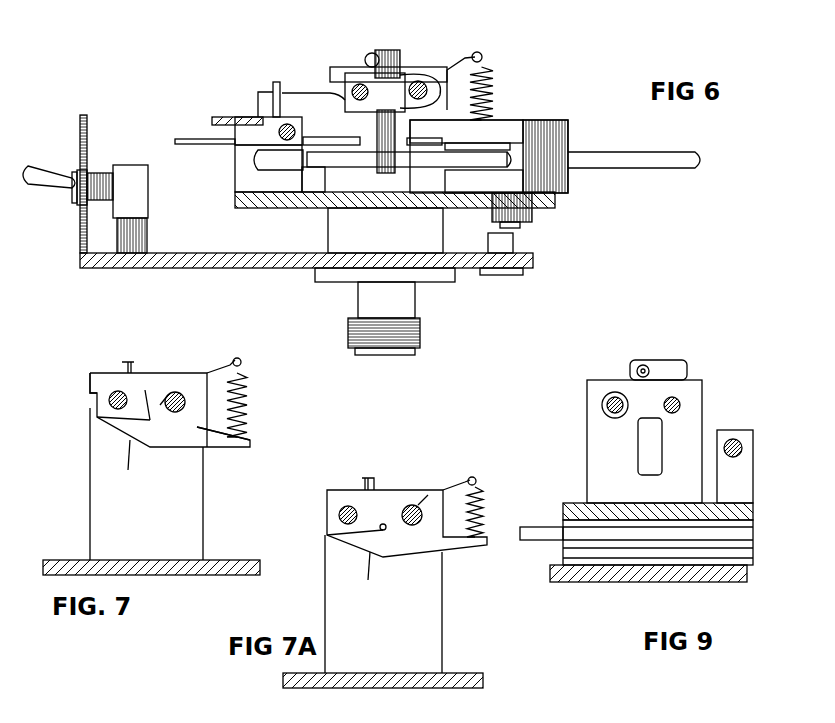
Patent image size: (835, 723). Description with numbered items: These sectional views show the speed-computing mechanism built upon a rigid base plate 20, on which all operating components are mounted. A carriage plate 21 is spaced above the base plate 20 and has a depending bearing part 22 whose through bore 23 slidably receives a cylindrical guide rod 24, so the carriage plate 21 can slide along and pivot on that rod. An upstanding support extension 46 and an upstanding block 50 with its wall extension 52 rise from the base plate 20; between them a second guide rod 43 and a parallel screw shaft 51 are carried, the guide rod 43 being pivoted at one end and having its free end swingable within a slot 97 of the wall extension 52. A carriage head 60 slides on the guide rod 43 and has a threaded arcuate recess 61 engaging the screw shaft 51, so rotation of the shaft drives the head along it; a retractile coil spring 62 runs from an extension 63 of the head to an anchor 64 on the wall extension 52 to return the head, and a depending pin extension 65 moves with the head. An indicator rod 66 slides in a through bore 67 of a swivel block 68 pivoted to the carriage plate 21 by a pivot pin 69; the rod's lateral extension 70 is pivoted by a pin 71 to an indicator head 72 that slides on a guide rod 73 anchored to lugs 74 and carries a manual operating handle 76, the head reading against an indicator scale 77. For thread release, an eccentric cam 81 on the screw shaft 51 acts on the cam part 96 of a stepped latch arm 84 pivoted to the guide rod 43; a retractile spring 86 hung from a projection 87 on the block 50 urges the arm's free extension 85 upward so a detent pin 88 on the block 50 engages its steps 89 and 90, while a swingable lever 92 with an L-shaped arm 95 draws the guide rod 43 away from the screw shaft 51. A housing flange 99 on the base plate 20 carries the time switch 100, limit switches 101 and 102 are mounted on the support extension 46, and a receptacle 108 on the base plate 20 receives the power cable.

In FIG. 6, the base plate 20 is at (240, 268).
In FIG. 7, the base plate 20 is at (225, 572).
In FIG. 7A, the base plate 20 is at (450, 688).
In FIG. 9, the base plate 20 is at (607, 575).
In FIG. 6, the carriage plate 21 is at (312, 208).
In FIG. 9, the carriage plate 21 is at (635, 503).
In FIG. 9, the bearing part 22 is at (578, 548).
In FIG. 9, the through bore 23 is at (730, 580).
In FIG. 9, the guide rod 24 is at (543, 527).
In FIG. 6, the guide rod 43 is at (355, 86).
In FIG. 7, the guide rod 43 is at (110, 398).
In FIG. 7A, the guide rod 43 is at (348, 505).
In FIG. 9, the guide rod 43 is at (680, 400).
In FIG. 9, the support extension 46 is at (587, 430).
In FIG. 6, the block 50 is at (430, 226).
In FIG. 7, the block 50 is at (90, 490).
In FIG. 7A, the block 50 is at (430, 614).
In FIG. 6, the screw shaft 51 is at (425, 82).
In FIG. 7, the screw shaft 51 is at (180, 395).
In FIG. 7A, the screw shaft 51 is at (420, 505).
In FIG. 9, the screw shaft 51 is at (602, 405).
In FIG. 6, the wall extension 52 is at (340, 70).
In FIG. 7, the wall extension 52 is at (160, 373).
In FIG. 7A, the wall extension 52 is at (335, 490).
In FIG. 6, the carriage head 60 is at (345, 67).
In FIG. 6, the arcuate recess 61 is at (415, 75).
In FIG. 6, the retractile coil spring 62 is at (373, 53).
In FIG. 6, the extension 63 is at (395, 50).
In FIG. 7, the spring anchor 64 is at (126, 364).
In FIG. 7A, the spring anchor 64 is at (372, 478).
In FIG. 6, the pin extension 65 is at (390, 172).
In FIG. 6, the indicator arm or rod 66 is at (637, 170).
In FIG. 6, the through bore 67 is at (530, 162).
In FIG. 6, the swivel block 68 is at (545, 118).
In FIG. 6, the pivot pin 69 is at (522, 228).
In FIG. 6, the lateral extension 70 is at (300, 175).
In FIG. 6, the pin 71 is at (272, 205).
In FIG. 6, the indicator head 72 is at (258, 152).
In FIG. 6, the guide rod 73 is at (300, 122).
In FIG. 9, the guide rod 73 is at (740, 440).
In FIG. 9, the lugs 74 is at (722, 430).
In FIG. 6, the manual operating handle 76 is at (270, 84).
In FIG. 6, the indicator scale 77 is at (238, 117).
In FIG. 7, the eccentric cam 81 is at (160, 395).
In FIG. 7A, the eccentric cam 81 is at (430, 500).
In FIG. 6, the stepped latch arm 84 is at (372, 122).
In FIG. 7, the stepped latch arm 84 is at (133, 448).
In FIG. 7A, the stepped latch arm 84 is at (374, 574).
In FIG. 7, the free extension 85 is at (250, 440).
In FIG. 6, the retractile spring 86 is at (493, 90).
In FIG. 7, the retractile spring 86 is at (247, 400).
In FIG. 7A, the retractile spring 86 is at (483, 505).
In FIG. 6, the projection 87 is at (483, 57).
In FIG. 7, the projection 87 is at (242, 360).
In FIG. 7A, the projection 87 is at (478, 476).
In FIG. 7, the detent pin 88 is at (147, 390).
In FIG. 7A, the detent pin 88 is at (385, 524).
In FIG. 7, the step 89 is at (150, 447).
In FIG. 7A, the step 89 is at (385, 548).
In FIG. 7, the step 90 is at (125, 432).
In FIG. 7A, the step 90 is at (365, 550).
In FIG. 6, the swingable lever 92 is at (197, 144).
In FIG. 6, the L-shaped arm 95 is at (300, 80).
In FIG. 7, the cam part 96 is at (197, 445).
In FIG. 7A, the cam part 96 is at (445, 537).
In FIG. 7, the slot 97 is at (90, 378).
In FIG. 6, the housing flange 99 is at (80, 136).
In FIG. 6, the time on and off switch 100 is at (45, 186).
In FIG. 9, the limit switch 101 is at (645, 445).
In FIG. 9, the limit switch 102 is at (668, 360).
In FIG. 6, the receptacle 108 is at (500, 262).